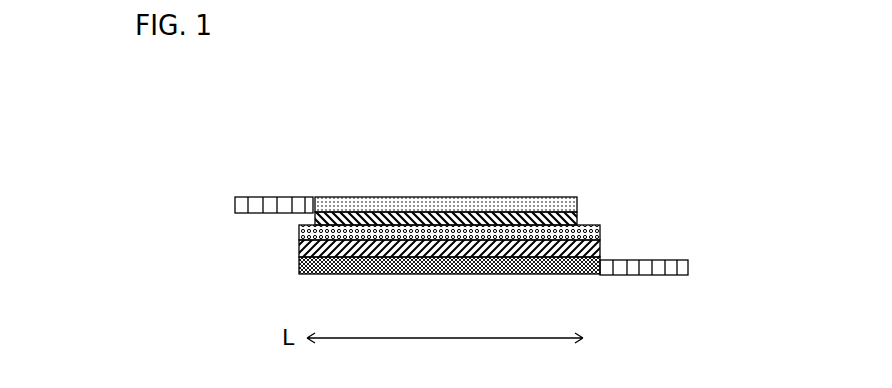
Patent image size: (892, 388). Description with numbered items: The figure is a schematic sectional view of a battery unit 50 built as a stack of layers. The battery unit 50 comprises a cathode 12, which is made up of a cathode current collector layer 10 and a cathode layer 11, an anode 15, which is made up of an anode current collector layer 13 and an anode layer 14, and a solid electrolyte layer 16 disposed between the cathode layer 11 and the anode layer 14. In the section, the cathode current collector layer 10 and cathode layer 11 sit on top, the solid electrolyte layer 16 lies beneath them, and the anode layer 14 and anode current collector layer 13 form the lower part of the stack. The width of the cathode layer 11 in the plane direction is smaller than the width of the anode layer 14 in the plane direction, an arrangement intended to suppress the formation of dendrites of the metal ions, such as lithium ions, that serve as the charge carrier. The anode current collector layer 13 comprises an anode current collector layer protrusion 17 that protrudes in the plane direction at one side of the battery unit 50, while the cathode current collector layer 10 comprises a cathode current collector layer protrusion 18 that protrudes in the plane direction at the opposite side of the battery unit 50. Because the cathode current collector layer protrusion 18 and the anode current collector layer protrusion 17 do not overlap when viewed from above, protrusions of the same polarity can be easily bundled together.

The battery unit 50 is at (424, 112).
The cathode current collector layer 10 is at (535, 197).
The cathode layer 11 is at (577, 218).
The cathode 12 is at (683, 145).
The anode current collector layer 13 is at (300, 278).
The anode layer 14 is at (298, 255).
The anode 15 is at (210, 243).
The solid electrolyte layer 16 is at (600, 230).
The anode current collector layer protrusion 17 is at (690, 284).
The cathode current collector layer protrusion 18 is at (313, 183).